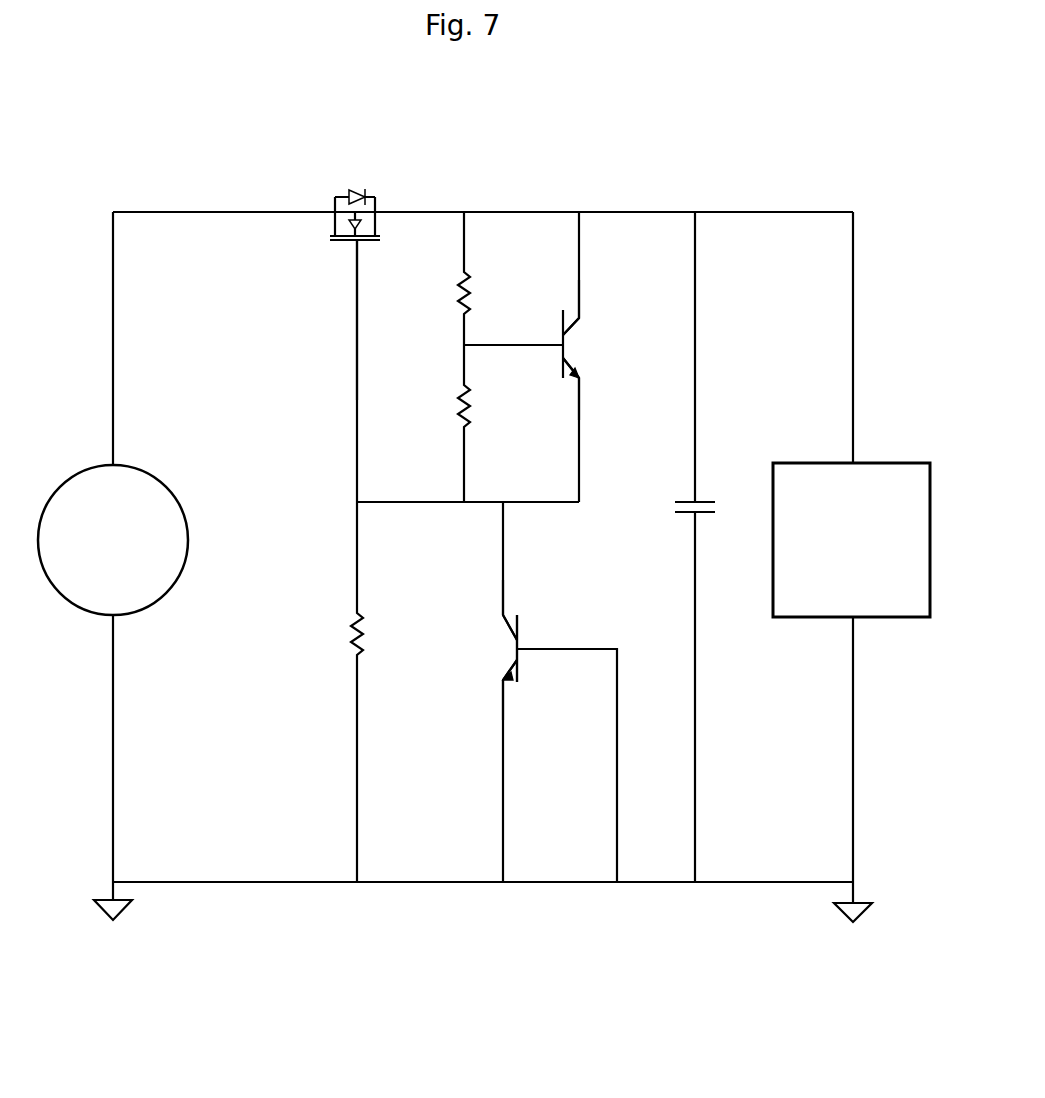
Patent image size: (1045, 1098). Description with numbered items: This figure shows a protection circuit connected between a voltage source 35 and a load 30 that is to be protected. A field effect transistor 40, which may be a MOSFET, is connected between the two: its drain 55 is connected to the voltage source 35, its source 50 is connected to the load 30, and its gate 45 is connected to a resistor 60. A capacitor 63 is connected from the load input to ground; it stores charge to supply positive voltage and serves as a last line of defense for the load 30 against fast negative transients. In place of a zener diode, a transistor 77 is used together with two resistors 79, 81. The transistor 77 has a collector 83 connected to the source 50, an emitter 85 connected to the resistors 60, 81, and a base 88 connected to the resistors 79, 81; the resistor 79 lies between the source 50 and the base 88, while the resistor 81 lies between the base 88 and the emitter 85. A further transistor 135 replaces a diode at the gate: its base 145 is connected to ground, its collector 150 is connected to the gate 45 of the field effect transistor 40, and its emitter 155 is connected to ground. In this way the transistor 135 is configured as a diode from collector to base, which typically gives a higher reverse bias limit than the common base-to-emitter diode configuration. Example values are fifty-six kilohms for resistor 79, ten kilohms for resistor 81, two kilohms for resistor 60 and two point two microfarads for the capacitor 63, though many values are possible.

The load 30 is at (822, 462).
The voltage source 35 is at (190, 555).
The field effect transistor 40 is at (368, 270).
The gate 45 is at (357, 245).
The source 50 is at (378, 200).
The drain 55 is at (335, 200).
The resistor 60 is at (352, 641).
The capacitor 63 is at (690, 515).
The transistor 77 is at (539, 300).
The resistor 79 is at (462, 287).
The resistor 81 is at (470, 410).
The collector 83 is at (572, 320).
The emitter 85 is at (571, 366).
The base 88 is at (563, 356).
The transistor 135 is at (518, 722).
The base 145 is at (520, 640).
The collector 150 is at (510, 636).
The emitter 155 is at (512, 662).